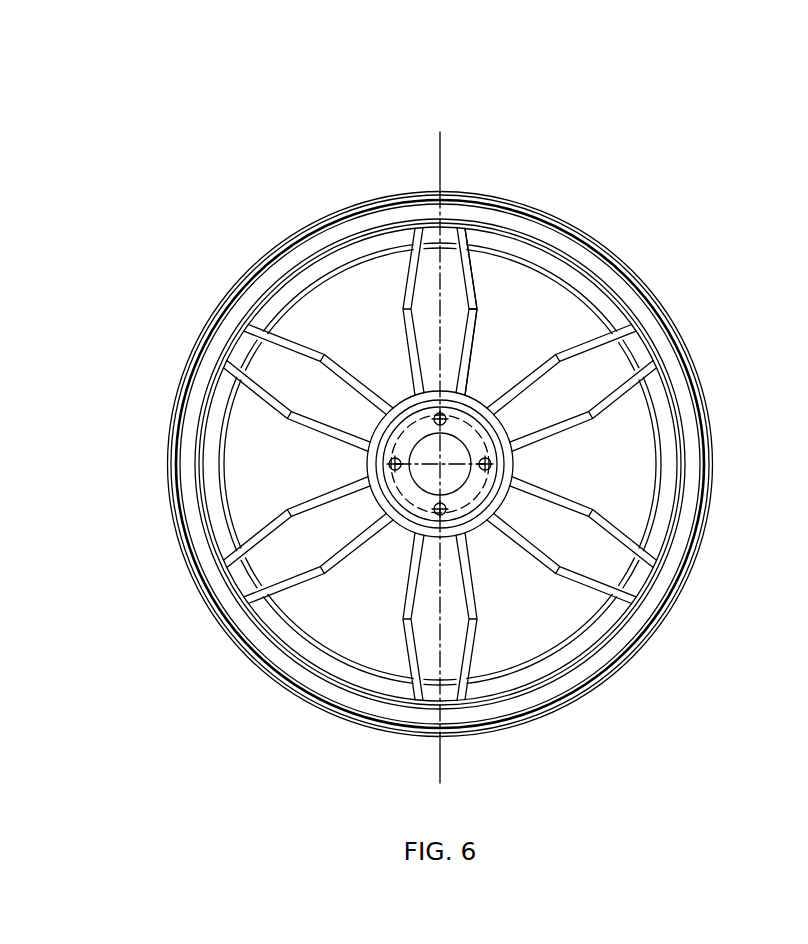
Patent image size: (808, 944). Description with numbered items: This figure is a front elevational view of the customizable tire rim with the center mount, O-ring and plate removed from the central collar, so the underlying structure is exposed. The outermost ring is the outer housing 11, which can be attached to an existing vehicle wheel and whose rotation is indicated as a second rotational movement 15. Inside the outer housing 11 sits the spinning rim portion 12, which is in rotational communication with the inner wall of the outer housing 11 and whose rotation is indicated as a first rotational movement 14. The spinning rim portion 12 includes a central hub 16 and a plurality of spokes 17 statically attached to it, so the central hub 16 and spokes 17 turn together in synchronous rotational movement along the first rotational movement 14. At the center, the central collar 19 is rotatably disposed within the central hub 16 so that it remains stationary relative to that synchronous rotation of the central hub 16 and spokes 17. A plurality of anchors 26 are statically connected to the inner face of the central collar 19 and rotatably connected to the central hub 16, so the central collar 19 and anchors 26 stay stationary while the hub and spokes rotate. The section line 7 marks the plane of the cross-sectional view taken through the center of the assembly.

The section line 7- 7 is at (480, 783).
The outer housing 11 is at (300, 241).
The spinning rim portion 12 is at (641, 428).
The first rotational movement 14 is at (210, 440).
The second rotational movement 15 is at (562, 205).
The central hub 16 is at (416, 412).
The spokes 17 is at (474, 318).
The central collar 19 is at (410, 482).
The anchors 26 is at (441, 413).